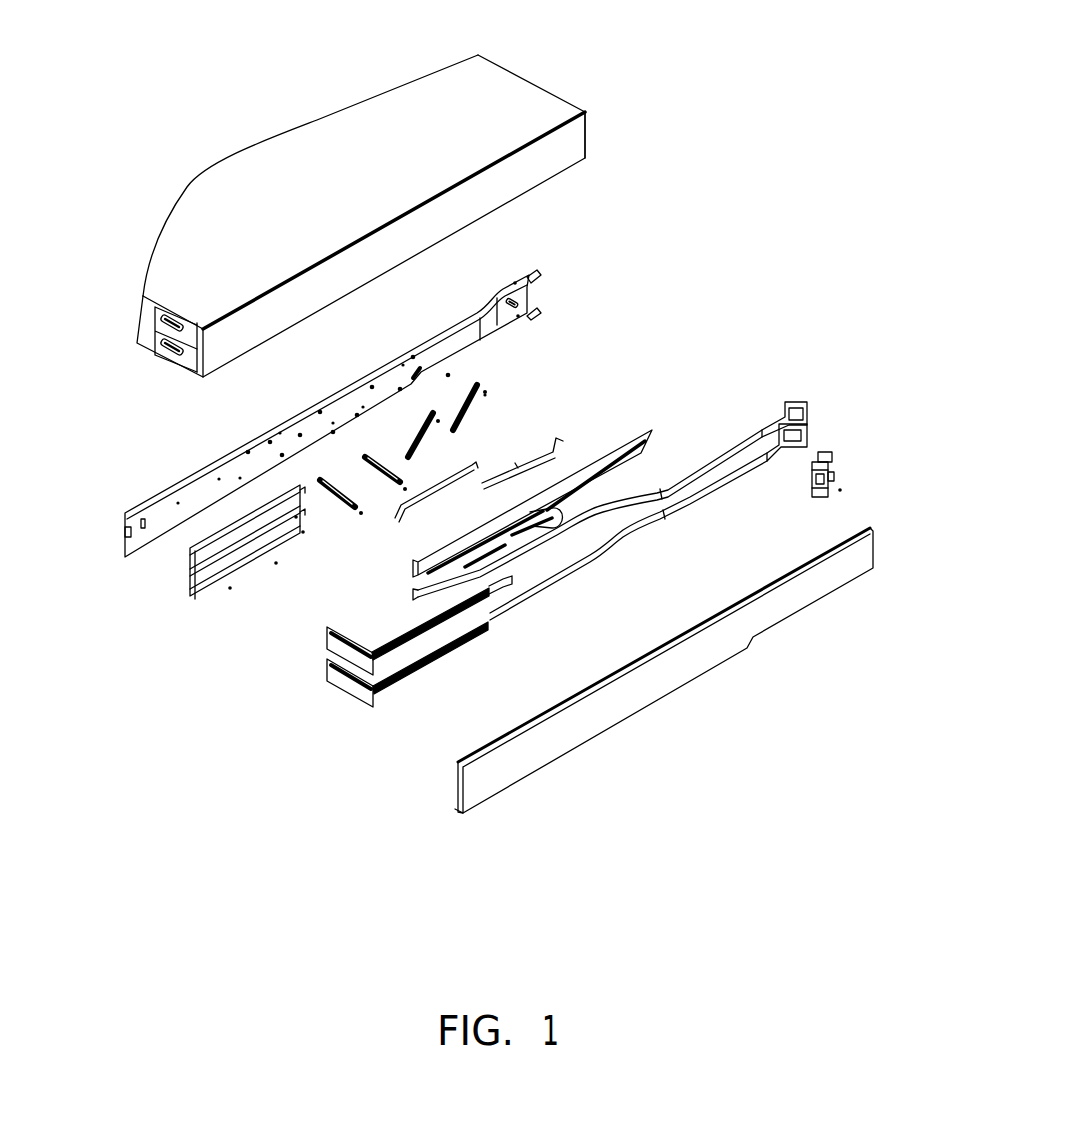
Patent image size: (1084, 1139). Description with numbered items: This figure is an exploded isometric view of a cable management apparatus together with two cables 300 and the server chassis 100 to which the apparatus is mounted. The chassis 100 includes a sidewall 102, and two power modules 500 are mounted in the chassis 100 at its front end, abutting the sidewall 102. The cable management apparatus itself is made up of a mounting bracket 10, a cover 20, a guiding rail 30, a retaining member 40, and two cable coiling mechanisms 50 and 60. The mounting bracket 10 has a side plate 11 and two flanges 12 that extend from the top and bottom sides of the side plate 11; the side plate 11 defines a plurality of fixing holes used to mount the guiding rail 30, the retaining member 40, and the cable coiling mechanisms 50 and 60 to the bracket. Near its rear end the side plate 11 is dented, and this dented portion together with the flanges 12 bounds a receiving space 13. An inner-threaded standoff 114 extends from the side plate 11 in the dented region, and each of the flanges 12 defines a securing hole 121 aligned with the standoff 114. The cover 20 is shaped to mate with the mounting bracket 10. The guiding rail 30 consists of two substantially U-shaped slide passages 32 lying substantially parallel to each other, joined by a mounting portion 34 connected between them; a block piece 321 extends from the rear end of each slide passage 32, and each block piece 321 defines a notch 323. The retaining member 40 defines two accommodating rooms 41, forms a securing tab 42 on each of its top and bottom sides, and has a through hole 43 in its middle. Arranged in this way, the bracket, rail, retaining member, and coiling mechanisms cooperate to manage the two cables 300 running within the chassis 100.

The chassis 100 is at (395, 214).
The sidewall 102 is at (572, 138).
The securing hole 121 is at (515, 281).
The inner-threaded standoff 114 is at (520, 300).
The receiving space 13 is at (533, 314).
The mounting bracket 10 is at (365, 386).
The flanges 12 is at (219, 456).
The side plate 11 is at (127, 527).
The power modules 500 is at (186, 358).
The guiding rail 30 is at (257, 579).
The slide passages 32 is at (207, 577).
The mounting portion 34 is at (193, 573).
The block piece 321 is at (297, 541).
The notch 323 is at (300, 520).
The cable coiling mechanism 50 is at (346, 518).
The cable coiling mechanism 60 is at (486, 421).
The cables 300 is at (574, 586).
The cover 20 is at (600, 712).
The retaining member 40 is at (808, 484).
The accommodating rooms 41 is at (813, 495).
The securing tab 42 is at (822, 455).
The through hole 43 is at (833, 477).